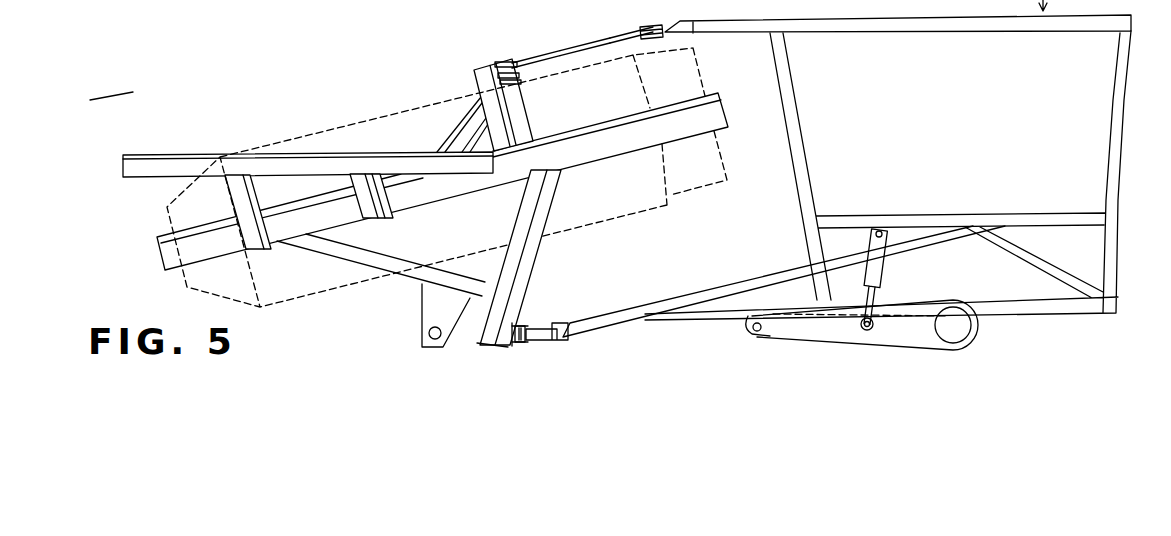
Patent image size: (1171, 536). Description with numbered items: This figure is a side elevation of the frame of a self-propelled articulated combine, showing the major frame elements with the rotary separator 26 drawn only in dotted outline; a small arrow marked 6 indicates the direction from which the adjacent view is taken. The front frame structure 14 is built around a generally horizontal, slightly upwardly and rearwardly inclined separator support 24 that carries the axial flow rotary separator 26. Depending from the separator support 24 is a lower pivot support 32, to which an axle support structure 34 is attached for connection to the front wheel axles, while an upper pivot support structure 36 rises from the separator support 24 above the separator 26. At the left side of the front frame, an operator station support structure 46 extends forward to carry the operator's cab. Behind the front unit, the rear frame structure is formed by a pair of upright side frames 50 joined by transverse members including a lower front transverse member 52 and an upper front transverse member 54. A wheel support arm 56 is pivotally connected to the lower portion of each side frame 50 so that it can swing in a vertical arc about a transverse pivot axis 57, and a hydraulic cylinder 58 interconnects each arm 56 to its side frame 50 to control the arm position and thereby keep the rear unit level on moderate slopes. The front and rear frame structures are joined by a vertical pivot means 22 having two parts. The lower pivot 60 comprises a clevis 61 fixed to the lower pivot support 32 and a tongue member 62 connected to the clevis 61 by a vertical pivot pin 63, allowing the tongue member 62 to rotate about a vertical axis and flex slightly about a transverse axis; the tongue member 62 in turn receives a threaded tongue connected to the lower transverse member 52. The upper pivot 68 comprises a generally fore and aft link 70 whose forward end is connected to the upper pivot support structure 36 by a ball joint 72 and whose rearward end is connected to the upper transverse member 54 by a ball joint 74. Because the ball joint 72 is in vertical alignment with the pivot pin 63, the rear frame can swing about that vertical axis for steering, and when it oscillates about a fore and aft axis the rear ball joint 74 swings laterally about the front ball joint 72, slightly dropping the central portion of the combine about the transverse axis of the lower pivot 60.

The section view indicator 6 is at (88, 97).
The front frame structure 14 is at (478, 18).
The vertical pivot means 22 is at (579, 19).
The separator support 24 is at (597, 132).
The rotary separator 26 is at (420, 101).
The lower pivot support 32 is at (525, 265).
The axle support structure 34 is at (422, 318).
The upper pivot support structure 36 is at (480, 65).
The operator station support structure 46 is at (163, 157).
The side frame 50 is at (1120, 112).
The lower front transverse member 52 is at (565, 337).
The upper front transverse member 54 is at (687, 28).
The wheel support arm 56 is at (880, 340).
The transverse pivot axis 57 is at (752, 332).
The hydraulic cylinder 58 is at (885, 264).
The lower pivot 60 is at (532, 346).
The clevis 61 is at (512, 346).
The tongue member 62 is at (547, 327).
The vertical pivot pin 63 is at (520, 323).
The upper pivot 68 is at (561, 22).
The link 70 is at (607, 43).
The ball joint 72 is at (510, 82).
The ball joint 74 is at (652, 42).